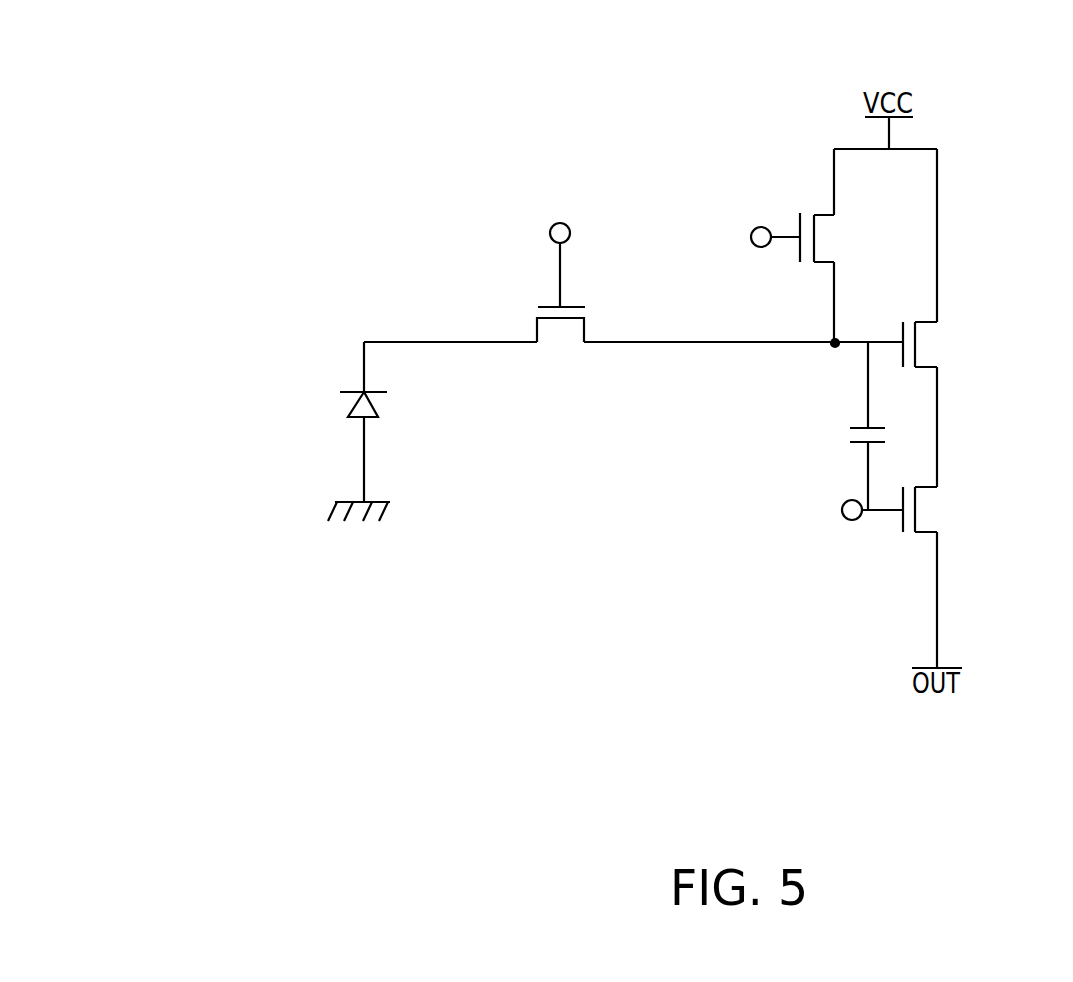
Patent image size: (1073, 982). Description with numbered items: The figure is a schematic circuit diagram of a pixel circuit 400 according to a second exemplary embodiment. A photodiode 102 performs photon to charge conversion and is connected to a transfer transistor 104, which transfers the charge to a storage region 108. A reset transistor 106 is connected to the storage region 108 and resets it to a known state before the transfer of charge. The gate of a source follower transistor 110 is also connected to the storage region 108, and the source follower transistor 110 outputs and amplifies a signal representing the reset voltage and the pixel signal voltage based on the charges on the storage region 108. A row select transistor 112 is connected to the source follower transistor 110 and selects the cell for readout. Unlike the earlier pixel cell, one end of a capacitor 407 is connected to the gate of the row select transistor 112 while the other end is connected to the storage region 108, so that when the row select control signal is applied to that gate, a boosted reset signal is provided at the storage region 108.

The pixel circuit 400 is at (1008, 87).
The photodiode 102 is at (362, 390).
The transfer transistor 104 is at (537, 313).
The reset transistor 106 is at (807, 212).
The storage region 108 is at (832, 346).
The source follower transistor 110 is at (906, 320).
The capacitor 407 is at (849, 432).
The row select transistor 112 is at (908, 486).